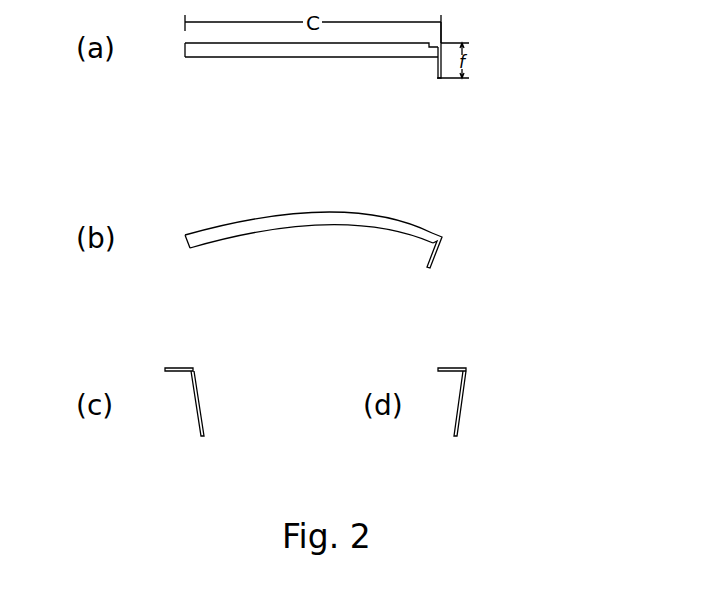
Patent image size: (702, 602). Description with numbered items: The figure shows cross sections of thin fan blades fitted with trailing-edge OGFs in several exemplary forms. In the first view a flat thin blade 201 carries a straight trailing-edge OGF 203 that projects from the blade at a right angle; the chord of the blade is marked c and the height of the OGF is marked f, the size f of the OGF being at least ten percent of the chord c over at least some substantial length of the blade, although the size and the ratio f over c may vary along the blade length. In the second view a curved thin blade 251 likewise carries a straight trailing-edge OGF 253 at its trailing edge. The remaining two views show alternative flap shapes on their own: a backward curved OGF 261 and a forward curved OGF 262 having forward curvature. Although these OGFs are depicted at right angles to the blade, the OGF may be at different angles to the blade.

The flat thin blade 201 is at (265, 60).
The trailing-edge OGF 203 is at (437, 68).
The curved thin blade 251 is at (263, 232).
The trailing-edge OGF 253 is at (425, 255).
The backward curved OGF 261 is at (200, 405).
The forward curved OGF 262 is at (467, 385).